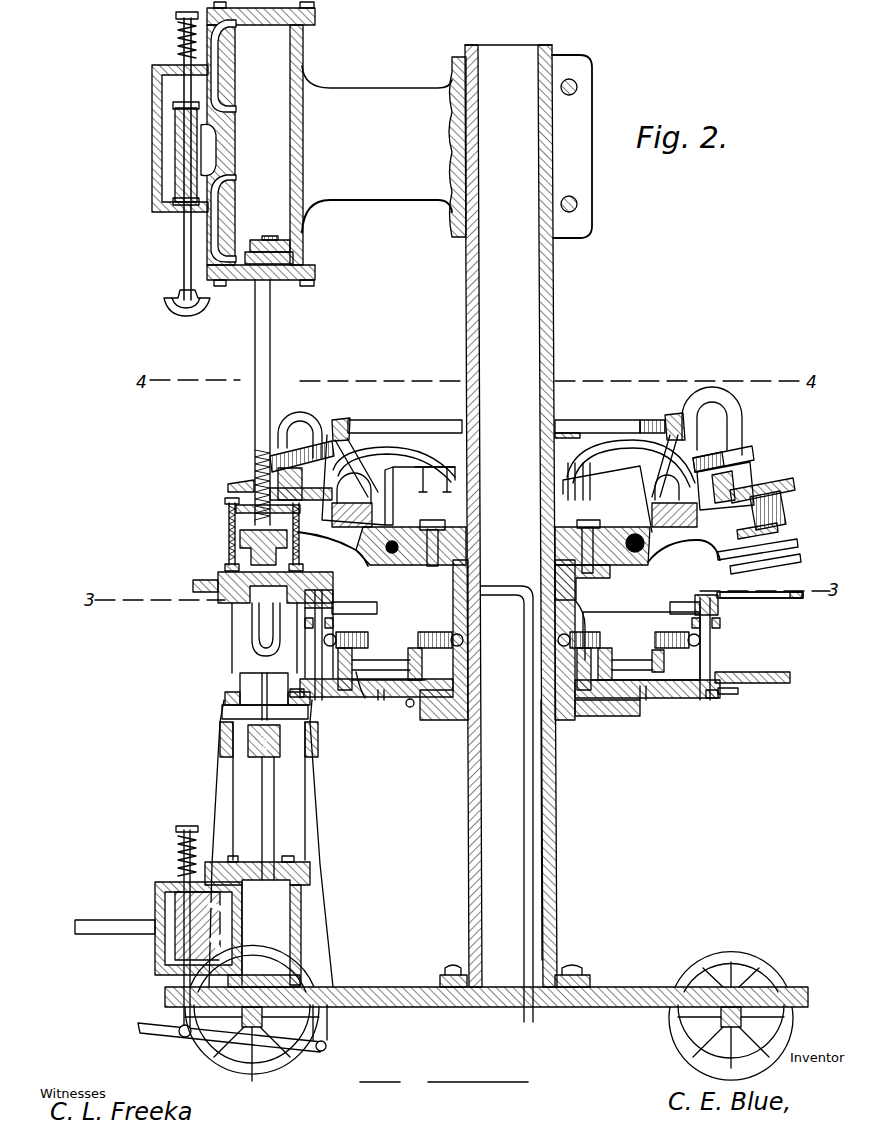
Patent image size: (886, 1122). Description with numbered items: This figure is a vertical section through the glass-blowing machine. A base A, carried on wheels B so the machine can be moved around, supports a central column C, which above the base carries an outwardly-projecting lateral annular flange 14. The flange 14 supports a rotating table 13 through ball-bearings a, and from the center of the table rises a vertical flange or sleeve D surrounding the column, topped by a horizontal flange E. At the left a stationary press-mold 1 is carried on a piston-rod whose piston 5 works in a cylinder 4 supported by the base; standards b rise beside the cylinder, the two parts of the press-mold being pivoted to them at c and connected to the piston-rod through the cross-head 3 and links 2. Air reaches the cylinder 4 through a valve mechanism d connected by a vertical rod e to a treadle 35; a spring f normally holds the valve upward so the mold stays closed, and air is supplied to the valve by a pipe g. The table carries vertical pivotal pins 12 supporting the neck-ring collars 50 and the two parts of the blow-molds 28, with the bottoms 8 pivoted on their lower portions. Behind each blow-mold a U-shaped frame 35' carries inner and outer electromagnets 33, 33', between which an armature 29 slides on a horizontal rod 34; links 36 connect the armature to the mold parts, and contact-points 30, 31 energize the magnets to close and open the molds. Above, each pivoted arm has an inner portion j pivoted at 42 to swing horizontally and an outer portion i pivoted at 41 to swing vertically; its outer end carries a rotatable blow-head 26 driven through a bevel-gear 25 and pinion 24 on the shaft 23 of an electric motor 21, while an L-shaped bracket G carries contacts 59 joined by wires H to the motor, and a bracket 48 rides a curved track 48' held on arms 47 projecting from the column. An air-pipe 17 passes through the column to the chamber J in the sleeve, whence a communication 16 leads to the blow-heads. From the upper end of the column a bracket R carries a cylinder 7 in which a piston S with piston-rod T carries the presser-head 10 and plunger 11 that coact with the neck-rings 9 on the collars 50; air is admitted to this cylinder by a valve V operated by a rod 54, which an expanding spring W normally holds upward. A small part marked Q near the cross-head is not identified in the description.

The column C is at (530, 305).
The bracket R is at (384, 147).
The cylinder 7 is at (288, 80).
The piston S is at (296, 255).
The steam-engine-valve construction V is at (205, 152).
The expanding spring W is at (180, 50).
The operating-rod 54 is at (182, 258).
The piston-rod T is at (263, 372).
The air-pipe 17 is at (543, 835).
The pivot point of inner arm portion 42 is at (470, 547).
The arms 47 is at (440, 414).
The curved track 48' is at (508, 414).
The communication 16 is at (300, 425).
The brackets 48 is at (512, 464).
The pinions 24 is at (762, 468).
The bevel-gears 25 is at (228, 488).
The wires H is at (388, 450).
The L-shaped brackets G is at (252, 812).
The shafts 23 is at (372, 495).
The electric motors 21 is at (362, 490).
The electric contacts 59 is at (604, 490).
The inner portion of arm j is at (438, 532).
The chamber J is at (578, 539).
The pivot point of outer arm portion 41 is at (380, 568).
The outer portion of arm i is at (790, 510).
The plunger 11 is at (288, 545).
The presser-head 10 is at (228, 560).
The head 26 is at (772, 556).
The horizontal flange E is at (612, 582).
The vertical flange D is at (578, 618).
The neck-ring-supporting collars 50 is at (222, 596).
The neck-rings 9 is at (196, 586).
The press-mold 1 is at (242, 647).
The pivotal pins 12 is at (316, 640).
The links 2 is at (246, 688).
The stop Q is at (720, 710).
The pivotal connection c is at (300, 716).
The cross-head 3 is at (250, 738).
The standard b is at (218, 790).
The piston 5 is at (292, 890).
The cylinder 4 is at (292, 940).
The valve mechanism d is at (178, 918).
The vertical rod e is at (170, 958).
The spring f is at (178, 848).
The pipe g is at (114, 915).
The treadle 35 is at (226, 1024).
The base A is at (412, 980).
The wheels B is at (745, 962).
The lateral annular flange 14 is at (440, 700).
The blow-molds 28 is at (700, 580).
The outer electromagnets 33' is at (539, 634).
The inner electromagnets 33 is at (523, 620).
The electric armature 29 is at (412, 648).
The horizontal shaft or rod 34 is at (360, 690).
The links 36 is at (362, 700).
The contact-points 30 is at (380, 700).
The contact-points 31 is at (386, 702).
The U-shaped brackets or frames 35' is at (557, 698).
The ball-bearings a is at (408, 721).
The bottoms 8 is at (691, 684).
The rotating table 13 is at (625, 700).